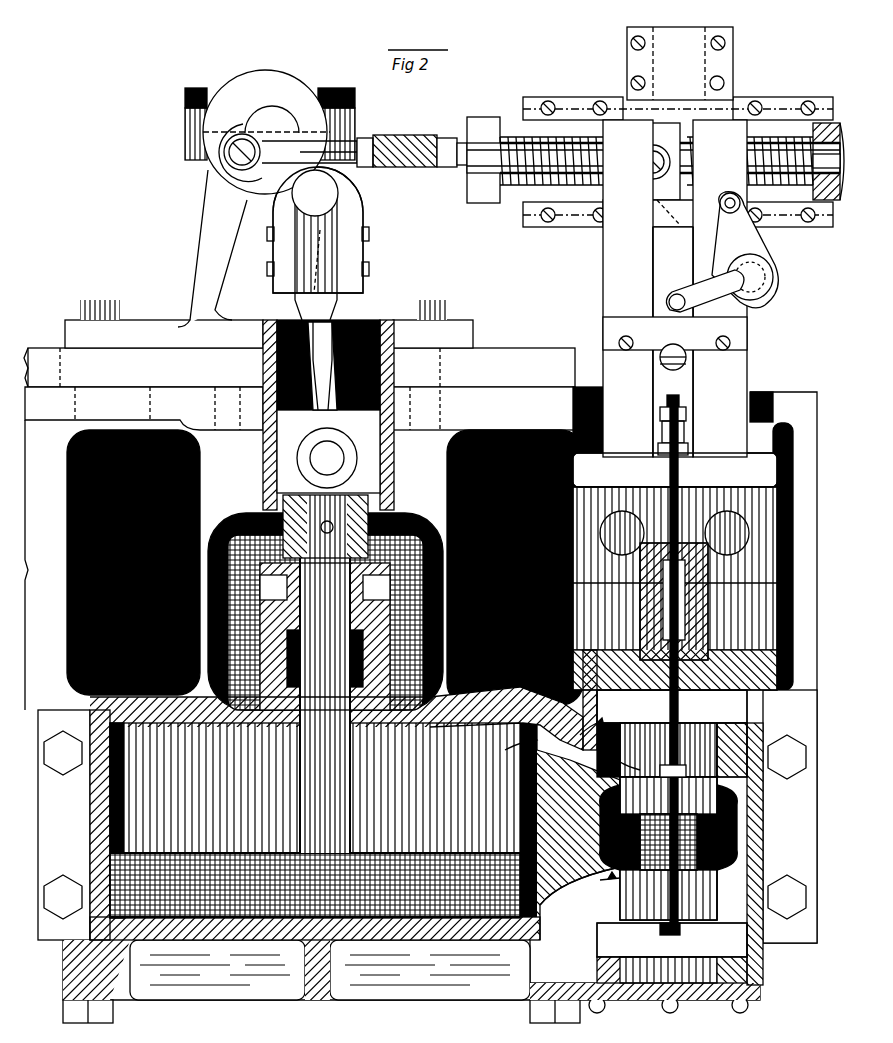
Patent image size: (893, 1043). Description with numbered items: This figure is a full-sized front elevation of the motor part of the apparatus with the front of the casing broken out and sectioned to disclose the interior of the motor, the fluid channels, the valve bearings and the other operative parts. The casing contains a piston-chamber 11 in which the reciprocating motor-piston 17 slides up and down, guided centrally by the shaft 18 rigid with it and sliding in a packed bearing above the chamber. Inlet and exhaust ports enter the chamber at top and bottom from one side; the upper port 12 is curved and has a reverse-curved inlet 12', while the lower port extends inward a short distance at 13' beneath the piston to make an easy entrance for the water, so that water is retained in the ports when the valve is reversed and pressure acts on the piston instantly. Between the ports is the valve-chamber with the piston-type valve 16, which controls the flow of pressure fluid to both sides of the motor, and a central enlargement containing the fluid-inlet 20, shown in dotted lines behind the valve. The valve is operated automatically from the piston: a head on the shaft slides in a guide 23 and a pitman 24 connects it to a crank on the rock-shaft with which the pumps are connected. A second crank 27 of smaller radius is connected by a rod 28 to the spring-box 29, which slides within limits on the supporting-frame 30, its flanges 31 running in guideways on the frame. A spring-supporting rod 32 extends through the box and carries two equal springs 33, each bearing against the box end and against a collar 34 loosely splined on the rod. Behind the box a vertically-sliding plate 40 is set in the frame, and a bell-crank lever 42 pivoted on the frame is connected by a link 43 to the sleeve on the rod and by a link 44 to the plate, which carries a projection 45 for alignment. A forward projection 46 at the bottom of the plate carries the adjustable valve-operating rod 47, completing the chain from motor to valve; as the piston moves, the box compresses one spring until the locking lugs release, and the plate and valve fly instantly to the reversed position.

The piston-chamber 11 is at (315, 820).
The inlet port 12 is at (610, 744).
The inlet 12' is at (515, 729).
The inward port extension 13' is at (565, 901).
The valve 16 is at (622, 897).
The motor-piston 17 is at (380, 860).
The shaft 18 is at (298, 796).
The fluid-inlet 20 is at (683, 770).
The guide 23 is at (393, 320).
The pitman 24 is at (328, 407).
The crank 27 is at (222, 112).
The rod 28 is at (400, 143).
The spring-box 29 is at (467, 130).
The supporting-frame 30 is at (610, 243).
The flanges 31 is at (487, 117).
The spring-supporting rod 32 is at (840, 205).
The spring 33 is at (517, 133).
The collar 34 is at (630, 140).
The vertically-sliding plate 40 is at (660, 285).
The bell-crank lever 42 is at (768, 248).
The link 43 is at (680, 218).
The link 44 is at (668, 327).
The projection 45 is at (673, 367).
The forward projection 46 is at (690, 428).
The valve-operating rod 47 is at (680, 480).